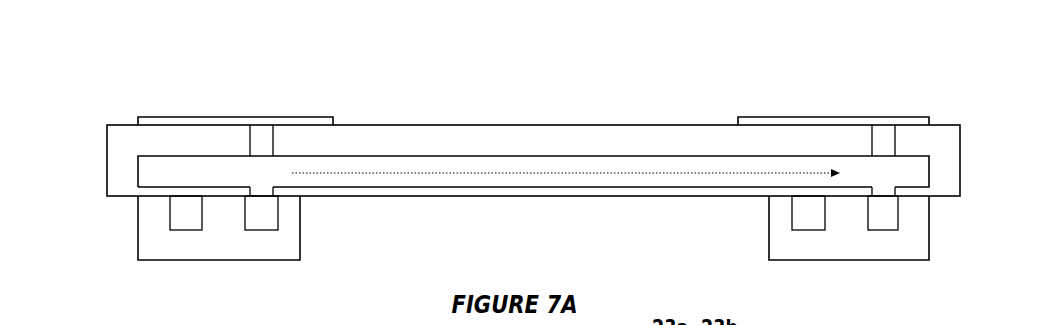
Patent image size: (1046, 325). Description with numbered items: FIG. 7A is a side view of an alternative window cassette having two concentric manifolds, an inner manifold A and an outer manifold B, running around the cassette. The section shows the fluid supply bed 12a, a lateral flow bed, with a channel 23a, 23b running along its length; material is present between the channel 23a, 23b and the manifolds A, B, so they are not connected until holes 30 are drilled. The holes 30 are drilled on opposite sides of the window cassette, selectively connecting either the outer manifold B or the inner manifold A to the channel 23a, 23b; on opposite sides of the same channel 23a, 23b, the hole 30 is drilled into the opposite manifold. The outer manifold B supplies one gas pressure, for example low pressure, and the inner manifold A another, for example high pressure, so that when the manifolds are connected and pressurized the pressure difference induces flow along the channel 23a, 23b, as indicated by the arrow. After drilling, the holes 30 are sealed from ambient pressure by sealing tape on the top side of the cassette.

The fluid supply bed 12a is at (132, 140).
The channel 23a is at (533, 113).
The channel 23b is at (652, 160).
The holes 30 is at (263, 185).